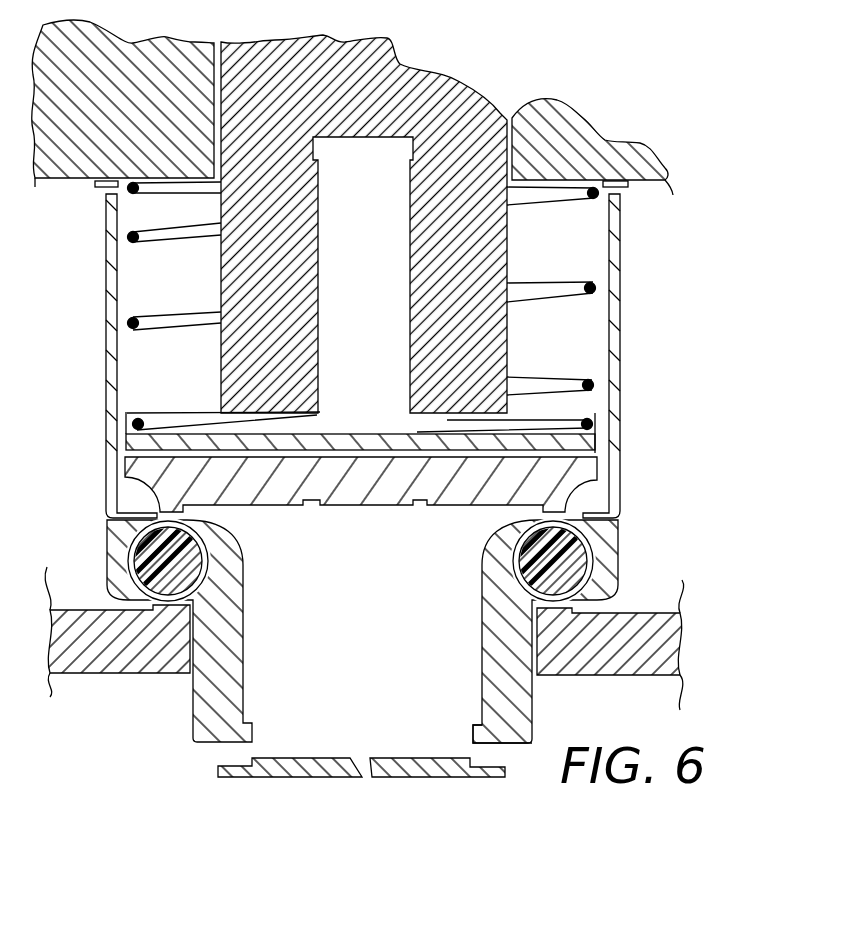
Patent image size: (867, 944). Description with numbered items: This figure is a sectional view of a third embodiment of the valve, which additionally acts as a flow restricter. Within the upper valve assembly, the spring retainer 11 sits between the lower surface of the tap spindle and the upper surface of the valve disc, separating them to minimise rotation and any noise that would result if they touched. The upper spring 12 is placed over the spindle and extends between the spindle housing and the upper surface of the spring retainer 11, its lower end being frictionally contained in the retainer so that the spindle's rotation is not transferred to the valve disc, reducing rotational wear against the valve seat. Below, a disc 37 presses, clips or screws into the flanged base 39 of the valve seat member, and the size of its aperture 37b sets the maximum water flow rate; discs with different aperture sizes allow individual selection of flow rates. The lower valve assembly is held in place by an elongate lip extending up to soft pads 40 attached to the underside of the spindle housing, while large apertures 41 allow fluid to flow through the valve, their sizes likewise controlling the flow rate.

The spring retainer 11 is at (593, 443).
The upper spring 12 is at (562, 299).
The disc 37 is at (450, 777).
The aperture 37b is at (362, 777).
The flanged base 39 is at (480, 745).
The soft pads 40 is at (102, 190).
The large apertures 41 is at (112, 493).